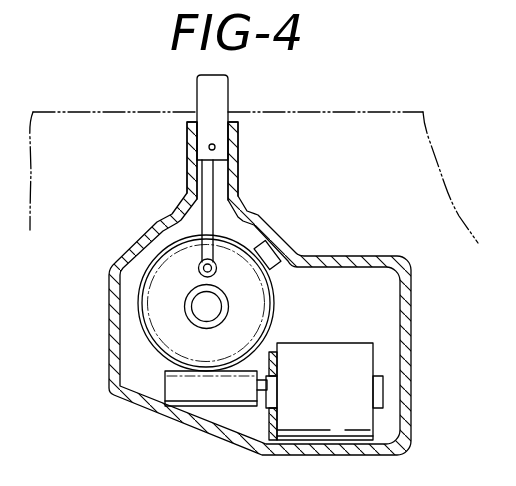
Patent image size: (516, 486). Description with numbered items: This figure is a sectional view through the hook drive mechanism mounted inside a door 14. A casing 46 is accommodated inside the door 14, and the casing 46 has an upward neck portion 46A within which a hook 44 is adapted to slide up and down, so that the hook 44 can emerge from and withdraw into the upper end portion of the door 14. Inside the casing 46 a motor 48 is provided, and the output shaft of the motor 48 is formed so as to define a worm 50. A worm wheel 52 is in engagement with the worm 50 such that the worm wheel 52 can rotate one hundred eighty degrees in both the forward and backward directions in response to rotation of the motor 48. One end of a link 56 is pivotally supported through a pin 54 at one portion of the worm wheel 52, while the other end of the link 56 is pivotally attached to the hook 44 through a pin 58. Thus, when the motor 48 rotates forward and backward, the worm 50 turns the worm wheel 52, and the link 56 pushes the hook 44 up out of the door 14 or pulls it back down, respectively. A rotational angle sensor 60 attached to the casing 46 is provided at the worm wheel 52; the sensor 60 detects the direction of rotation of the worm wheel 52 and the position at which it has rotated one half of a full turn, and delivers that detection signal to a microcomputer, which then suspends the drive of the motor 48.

The door 14 is at (348, 111).
The hook 44 is at (223, 93).
The casing 46 is at (412, 355).
The neck portion 46A is at (239, 165).
The motor 48 is at (331, 350).
The worm 50 is at (187, 407).
The worm wheel 52 is at (142, 332).
The pin 54 is at (202, 272).
The link 56 is at (216, 218).
The pin 58 is at (208, 150).
The rotational angle sensor 60 is at (272, 250).